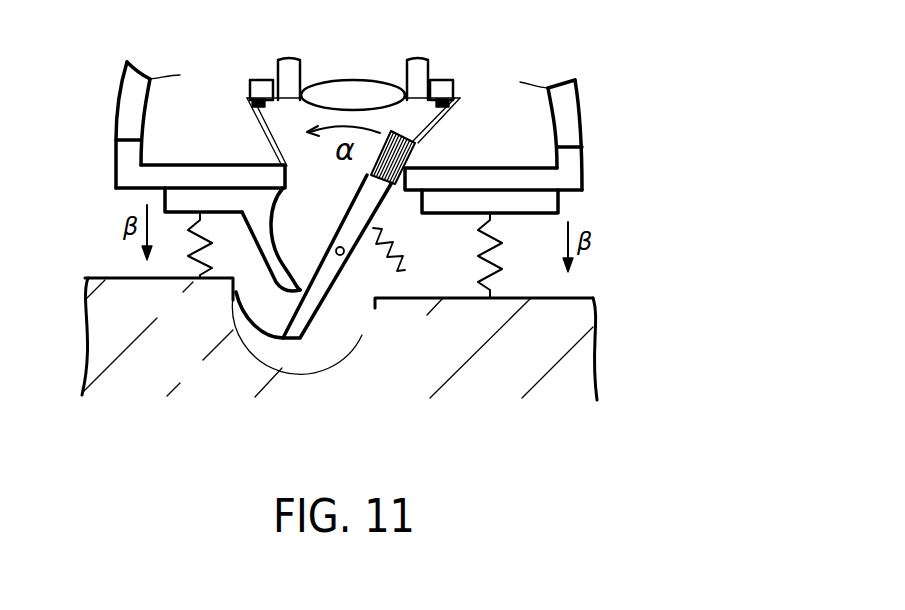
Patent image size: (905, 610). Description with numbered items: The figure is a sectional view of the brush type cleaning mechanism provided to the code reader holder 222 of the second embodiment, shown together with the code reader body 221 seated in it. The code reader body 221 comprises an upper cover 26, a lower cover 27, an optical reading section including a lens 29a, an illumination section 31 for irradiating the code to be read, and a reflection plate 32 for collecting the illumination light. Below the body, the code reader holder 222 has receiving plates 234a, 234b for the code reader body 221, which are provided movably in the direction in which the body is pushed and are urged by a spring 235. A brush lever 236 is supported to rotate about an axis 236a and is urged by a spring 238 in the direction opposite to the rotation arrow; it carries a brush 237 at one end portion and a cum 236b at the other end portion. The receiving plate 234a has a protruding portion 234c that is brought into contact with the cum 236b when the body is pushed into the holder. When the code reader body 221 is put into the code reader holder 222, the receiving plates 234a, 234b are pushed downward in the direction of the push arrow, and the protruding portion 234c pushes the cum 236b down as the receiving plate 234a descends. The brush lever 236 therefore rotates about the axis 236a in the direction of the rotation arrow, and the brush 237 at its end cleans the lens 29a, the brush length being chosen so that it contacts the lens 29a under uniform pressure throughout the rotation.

The upper cover 26 is at (125, 103).
The lower cover 27 is at (582, 178).
The lens 29a is at (345, 80).
The illumination section 31 is at (258, 80).
The reflection plate 32 is at (445, 135).
The code reader body 221 is at (584, 92).
The code reader holder 222 is at (595, 380).
The receiving plate 234a is at (165, 197).
The receiving plate 234b is at (558, 203).
The protruding portion 234c is at (233, 292).
The spring 235 is at (185, 252).
The brush lever 236 is at (352, 248).
The axis 236a is at (340, 247).
The cum 236b is at (278, 310).
The brush 237 is at (393, 188).
The spring 238 is at (403, 270).